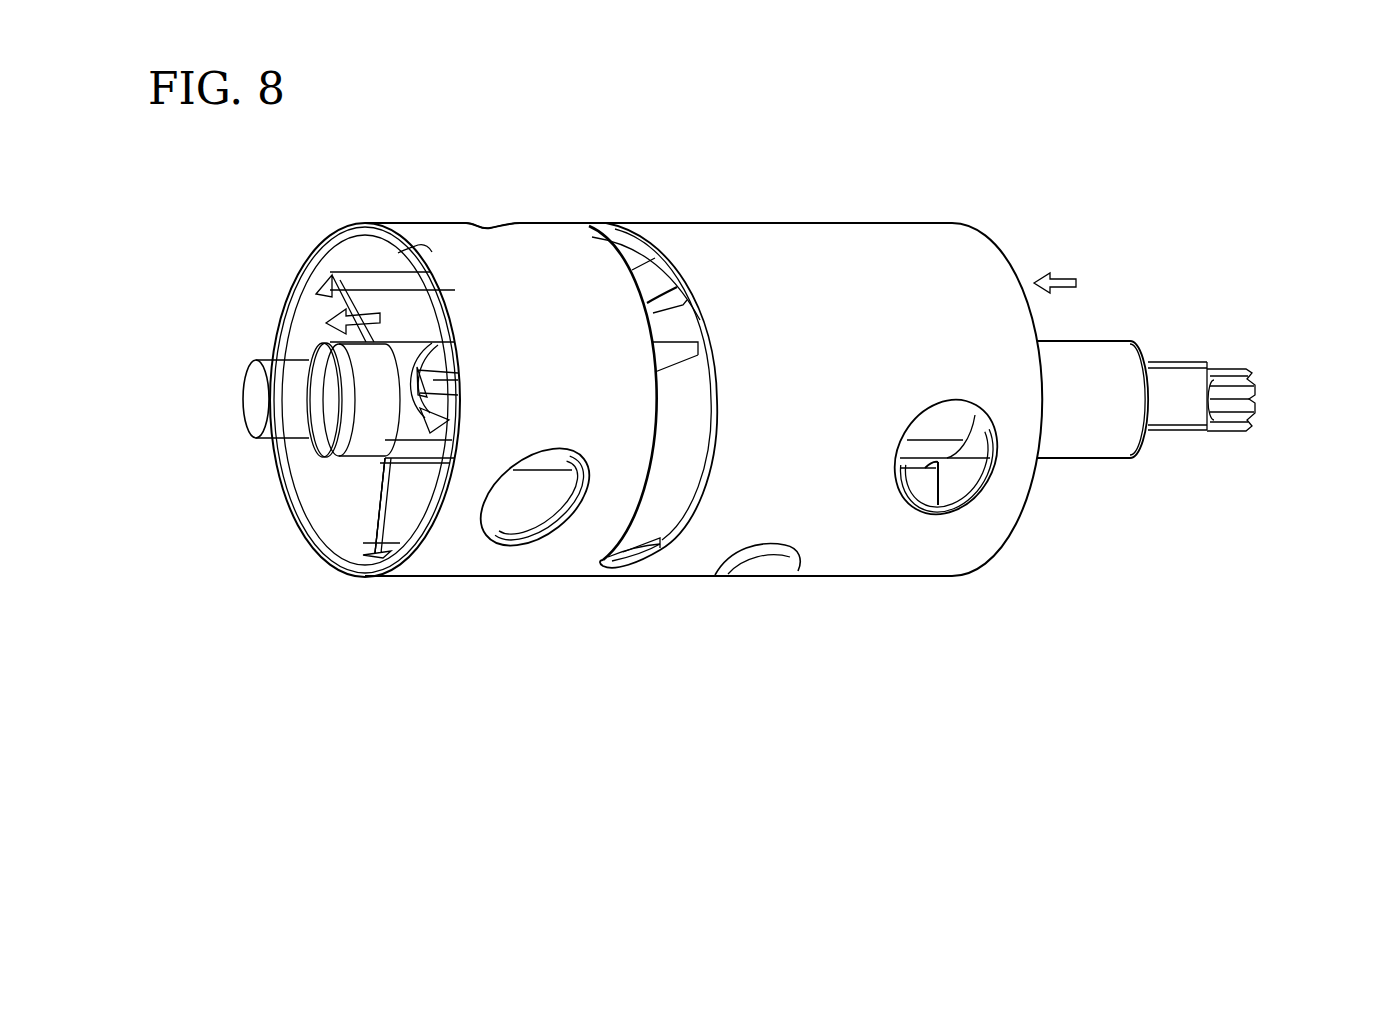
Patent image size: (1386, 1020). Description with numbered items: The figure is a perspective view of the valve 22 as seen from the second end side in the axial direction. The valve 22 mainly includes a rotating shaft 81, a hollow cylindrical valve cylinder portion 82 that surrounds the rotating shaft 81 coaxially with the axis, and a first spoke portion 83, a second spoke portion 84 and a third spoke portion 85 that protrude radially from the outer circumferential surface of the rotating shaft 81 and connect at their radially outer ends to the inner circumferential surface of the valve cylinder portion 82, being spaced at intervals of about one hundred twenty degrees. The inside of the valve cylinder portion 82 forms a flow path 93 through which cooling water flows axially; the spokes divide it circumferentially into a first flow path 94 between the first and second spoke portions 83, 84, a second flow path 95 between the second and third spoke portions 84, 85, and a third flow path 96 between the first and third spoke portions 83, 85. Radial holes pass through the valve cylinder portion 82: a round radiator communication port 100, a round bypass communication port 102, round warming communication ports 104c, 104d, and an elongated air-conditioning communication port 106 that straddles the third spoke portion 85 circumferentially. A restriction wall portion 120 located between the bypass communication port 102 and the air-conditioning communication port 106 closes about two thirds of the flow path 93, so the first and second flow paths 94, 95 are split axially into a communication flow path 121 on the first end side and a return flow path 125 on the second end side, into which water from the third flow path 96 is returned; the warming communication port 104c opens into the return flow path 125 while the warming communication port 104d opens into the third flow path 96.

The valve 22 is at (1205, 177).
The rotating shaft 81 is at (1078, 337).
The valve cylinder portion 82 is at (878, 222).
The first spoke portion 83 is at (367, 301).
The second spoke portion 84 is at (378, 503).
The third spoke portion 85 is at (442, 372).
The flow path 93 is at (335, 481).
The first flow path 94 is at (311, 322).
The second flow path 95 is at (423, 482).
The third flow path 96 is at (382, 250).
The radiator communication port 100 is at (933, 410).
The bypass communication port 102 is at (762, 548).
The warming communication port 104c is at (493, 484).
The warming communication port 104d is at (455, 226).
The air-conditioning communication port 106 is at (650, 478).
The restriction wall portion 120 is at (681, 412).
The communication flow path 121 is at (899, 570).
The return flow path 125 is at (424, 568).